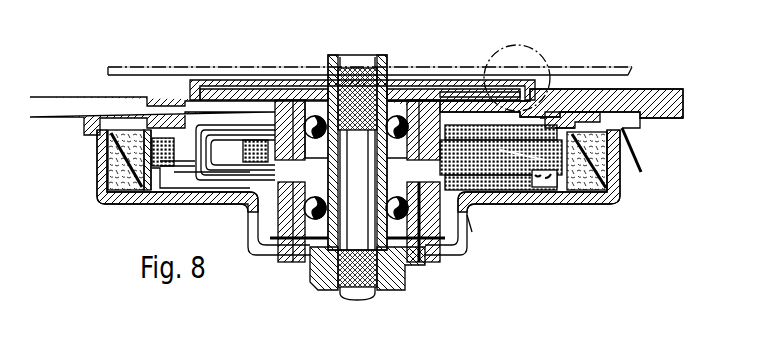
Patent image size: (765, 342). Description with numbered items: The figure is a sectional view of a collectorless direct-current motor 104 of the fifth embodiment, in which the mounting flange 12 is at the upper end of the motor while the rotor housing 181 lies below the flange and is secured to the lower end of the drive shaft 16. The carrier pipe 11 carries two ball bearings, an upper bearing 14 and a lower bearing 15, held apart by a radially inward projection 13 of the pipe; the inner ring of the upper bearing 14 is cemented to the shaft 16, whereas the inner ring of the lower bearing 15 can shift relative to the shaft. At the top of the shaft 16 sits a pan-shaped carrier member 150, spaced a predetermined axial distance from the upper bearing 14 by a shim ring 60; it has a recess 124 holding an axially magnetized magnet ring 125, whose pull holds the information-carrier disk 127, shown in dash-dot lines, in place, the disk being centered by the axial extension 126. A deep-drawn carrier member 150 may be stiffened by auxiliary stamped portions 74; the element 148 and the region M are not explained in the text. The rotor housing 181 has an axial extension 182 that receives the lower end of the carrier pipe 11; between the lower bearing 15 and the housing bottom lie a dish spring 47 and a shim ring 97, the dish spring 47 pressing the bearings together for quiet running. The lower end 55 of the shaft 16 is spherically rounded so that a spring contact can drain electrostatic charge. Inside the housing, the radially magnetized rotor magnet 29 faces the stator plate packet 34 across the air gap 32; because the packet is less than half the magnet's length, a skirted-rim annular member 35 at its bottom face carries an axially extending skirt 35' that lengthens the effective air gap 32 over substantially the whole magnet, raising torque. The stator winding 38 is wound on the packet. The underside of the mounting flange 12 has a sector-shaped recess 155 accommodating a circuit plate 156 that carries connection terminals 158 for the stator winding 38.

The motor 104 is at (87, 75).
The information-carrier disk 127 is at (131, 66).
The pan-shaped carrier member 150 is at (196, 80).
The upper bearing 14 is at (299, 105).
The auxiliary stamped portions 74 is at (312, 88).
The hub top 148 is at (349, 4).
The drive shaft 16 is at (356, 57).
The axial extension 126 is at (381, 57).
The shim ring 60 is at (398, 105).
The recess 124 is at (434, 90).
The magnet ring 125 is at (470, 90).
The magnet region M is at (537, 45).
The recess 155 is at (570, 110).
The circuit plate 156 is at (597, 112).
The mounting flange 12 is at (682, 93).
The connection terminals 158 is at (637, 155).
The rotor housing 181 is at (620, 183).
The rotor magnet 29 is at (110, 153).
The air gap 32 is at (152, 192).
The stator winding 38 is at (214, 182).
The radially inward projection 13 is at (252, 232).
The carrier pipe 11 is at (290, 250).
The dish spring 47 is at (314, 262).
The lower end of shaft 55 is at (345, 300).
The shim ring 97 is at (396, 270).
The lower bearing 15 is at (430, 245).
The axial extension 182 is at (475, 232).
The stator plate packet 34 is at (508, 192).
The skirted-rim annular member 35 is at (529, 217).
The skirt 35' is at (550, 211).